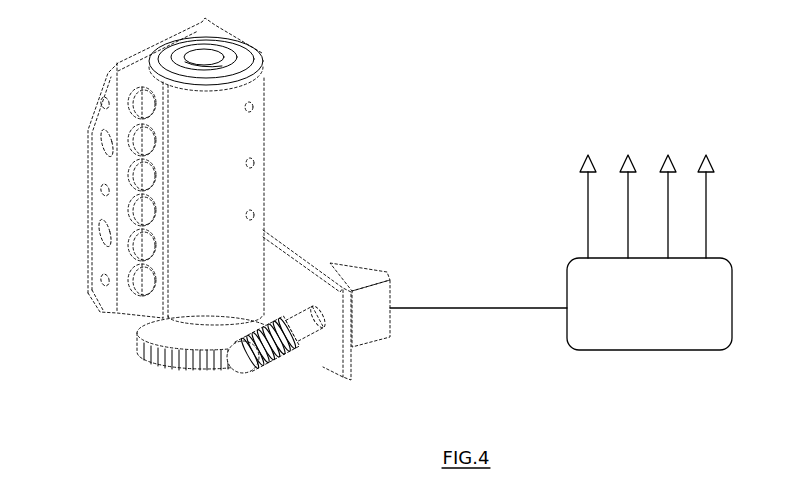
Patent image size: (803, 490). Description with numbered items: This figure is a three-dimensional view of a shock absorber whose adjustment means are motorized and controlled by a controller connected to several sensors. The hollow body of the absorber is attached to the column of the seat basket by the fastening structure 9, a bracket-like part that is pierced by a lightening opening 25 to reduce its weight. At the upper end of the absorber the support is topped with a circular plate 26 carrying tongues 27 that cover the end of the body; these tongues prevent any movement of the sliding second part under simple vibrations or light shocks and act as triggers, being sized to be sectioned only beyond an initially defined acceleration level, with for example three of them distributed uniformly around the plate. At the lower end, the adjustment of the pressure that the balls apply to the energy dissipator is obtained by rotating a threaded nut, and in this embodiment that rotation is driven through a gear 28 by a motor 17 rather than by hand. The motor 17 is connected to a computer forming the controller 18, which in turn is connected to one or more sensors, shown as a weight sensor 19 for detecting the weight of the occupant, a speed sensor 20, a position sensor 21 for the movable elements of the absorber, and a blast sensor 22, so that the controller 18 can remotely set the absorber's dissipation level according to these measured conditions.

The fastening structure 9 is at (113, 85).
The lightening opening 25 is at (100, 145).
The plate 26 is at (243, 50).
The tongue 27 is at (263, 58).
The gear 28 is at (160, 354).
The motor 17 is at (367, 325).
The controller 18 is at (697, 297).
The weight sensor 19 is at (587, 197).
The speed sensor 20 is at (627, 197).
The position sensor 21 is at (667, 197).
The blast sensor 22 is at (706, 197).